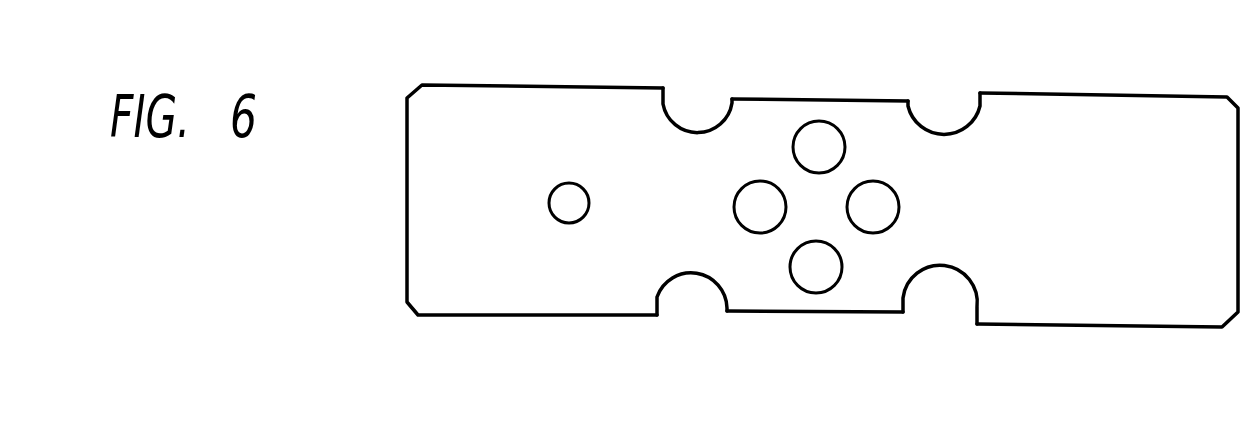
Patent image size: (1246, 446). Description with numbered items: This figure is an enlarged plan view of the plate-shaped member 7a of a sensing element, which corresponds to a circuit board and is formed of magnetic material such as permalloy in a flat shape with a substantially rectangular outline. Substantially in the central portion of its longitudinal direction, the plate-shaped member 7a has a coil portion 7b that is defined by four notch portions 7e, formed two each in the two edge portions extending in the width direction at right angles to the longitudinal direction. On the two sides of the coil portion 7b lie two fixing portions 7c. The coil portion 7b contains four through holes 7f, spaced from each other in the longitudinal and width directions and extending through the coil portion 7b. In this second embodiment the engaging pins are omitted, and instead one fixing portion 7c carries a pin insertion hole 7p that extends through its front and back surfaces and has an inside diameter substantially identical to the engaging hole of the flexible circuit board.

The plate-shaped member 7a is at (822, 191).
The coil portion 7b is at (869, 110).
The fixing portion 7c is at (469, 100).
The notch portion 7e is at (728, 118).
The through hole 7f is at (746, 194).
The pin insertion hole 7p is at (578, 216).